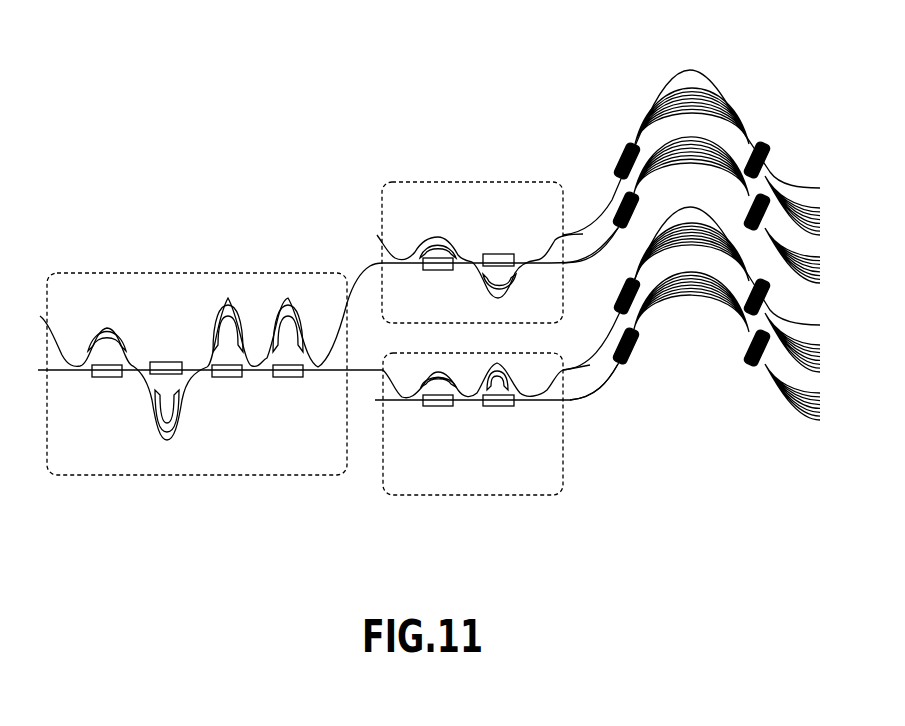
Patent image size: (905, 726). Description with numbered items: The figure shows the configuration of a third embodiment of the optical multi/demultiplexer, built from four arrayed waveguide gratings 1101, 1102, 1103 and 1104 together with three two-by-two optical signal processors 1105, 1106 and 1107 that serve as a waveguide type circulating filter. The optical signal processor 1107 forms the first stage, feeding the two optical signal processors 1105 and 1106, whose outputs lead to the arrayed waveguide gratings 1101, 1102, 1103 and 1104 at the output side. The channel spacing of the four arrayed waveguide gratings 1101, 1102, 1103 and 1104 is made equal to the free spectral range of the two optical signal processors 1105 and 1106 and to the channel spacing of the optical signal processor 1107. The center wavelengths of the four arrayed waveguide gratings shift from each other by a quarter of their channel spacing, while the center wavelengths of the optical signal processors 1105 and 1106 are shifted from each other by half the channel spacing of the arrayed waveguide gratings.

The arrayed waveguide grating 1101 is at (697, 88).
The arrayed waveguide grating 1102 is at (708, 138).
The arrayed waveguide grating 1103 is at (693, 238).
The arrayed waveguide grating 1104 is at (722, 300).
The 2×2 optical signal processor 1105 is at (535, 182).
The 2×2 optical signal processor 1106 is at (533, 495).
The 2×2 optical signal processor 1107 is at (290, 273).